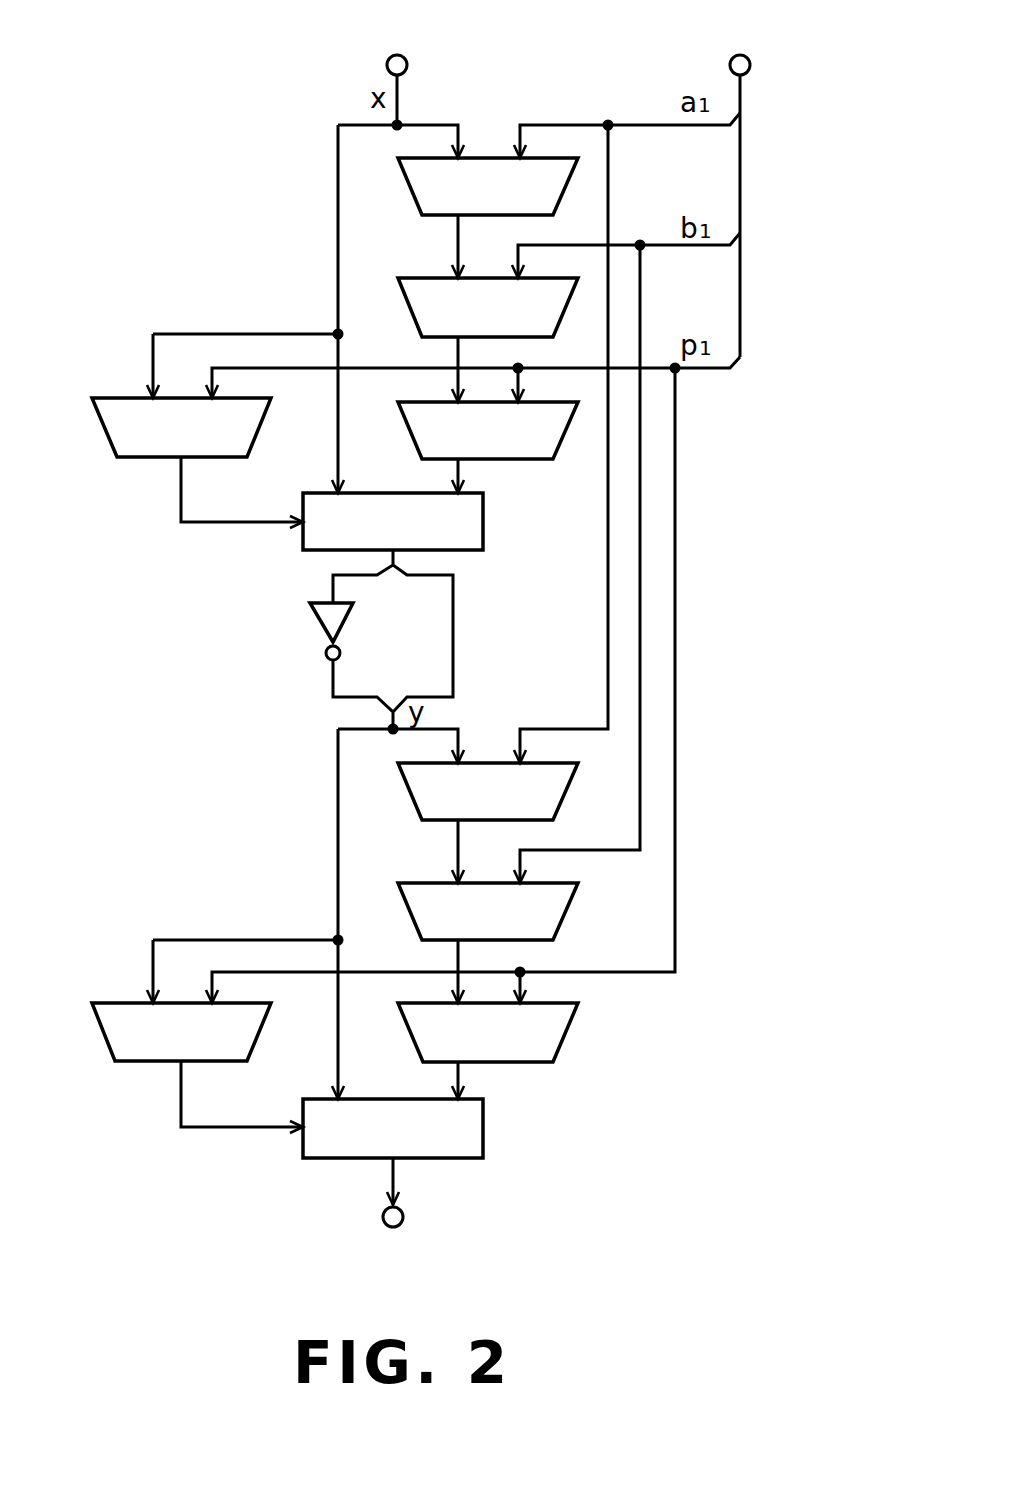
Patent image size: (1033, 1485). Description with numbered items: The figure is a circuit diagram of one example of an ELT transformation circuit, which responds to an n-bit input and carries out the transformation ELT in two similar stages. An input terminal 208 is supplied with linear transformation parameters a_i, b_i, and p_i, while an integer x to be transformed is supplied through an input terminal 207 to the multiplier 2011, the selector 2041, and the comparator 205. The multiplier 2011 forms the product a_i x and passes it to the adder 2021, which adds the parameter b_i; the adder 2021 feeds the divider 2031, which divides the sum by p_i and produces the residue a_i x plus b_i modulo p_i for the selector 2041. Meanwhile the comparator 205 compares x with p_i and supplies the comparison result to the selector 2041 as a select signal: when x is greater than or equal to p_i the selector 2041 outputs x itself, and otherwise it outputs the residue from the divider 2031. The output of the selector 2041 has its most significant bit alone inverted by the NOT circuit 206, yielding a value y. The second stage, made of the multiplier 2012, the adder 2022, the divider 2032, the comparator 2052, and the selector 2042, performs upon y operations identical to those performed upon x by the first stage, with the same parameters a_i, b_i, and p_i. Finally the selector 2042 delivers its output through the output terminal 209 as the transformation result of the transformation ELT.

The input terminal 207 is at (400, 55).
The input terminal 208 is at (744, 55).
The multiplier 2011 is at (418, 197).
The adder 2021 is at (413, 305).
The divider 2031 is at (518, 458).
The selector 2041 is at (484, 548).
The comparator 205 is at (120, 438).
The NOT circuit 206 is at (320, 618).
The multiplier 2012 is at (418, 800).
The adder 2022 is at (413, 910).
The divider 2032 is at (520, 1060).
The comparator 2052 is at (120, 1043).
The selector 2042 is at (484, 1137).
The output terminal 209 is at (403, 1222).